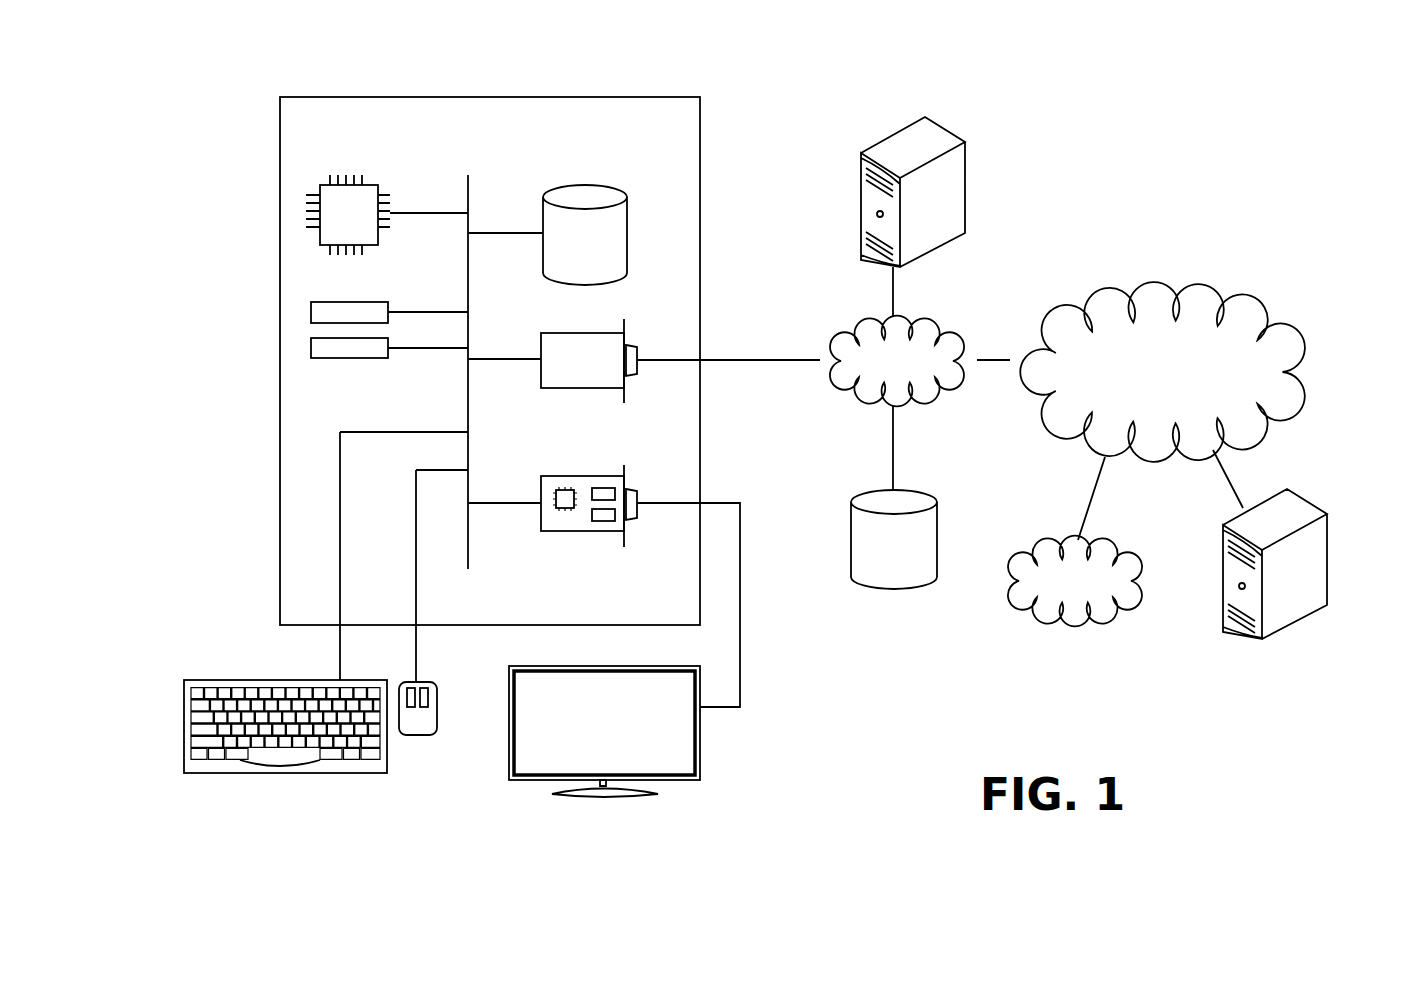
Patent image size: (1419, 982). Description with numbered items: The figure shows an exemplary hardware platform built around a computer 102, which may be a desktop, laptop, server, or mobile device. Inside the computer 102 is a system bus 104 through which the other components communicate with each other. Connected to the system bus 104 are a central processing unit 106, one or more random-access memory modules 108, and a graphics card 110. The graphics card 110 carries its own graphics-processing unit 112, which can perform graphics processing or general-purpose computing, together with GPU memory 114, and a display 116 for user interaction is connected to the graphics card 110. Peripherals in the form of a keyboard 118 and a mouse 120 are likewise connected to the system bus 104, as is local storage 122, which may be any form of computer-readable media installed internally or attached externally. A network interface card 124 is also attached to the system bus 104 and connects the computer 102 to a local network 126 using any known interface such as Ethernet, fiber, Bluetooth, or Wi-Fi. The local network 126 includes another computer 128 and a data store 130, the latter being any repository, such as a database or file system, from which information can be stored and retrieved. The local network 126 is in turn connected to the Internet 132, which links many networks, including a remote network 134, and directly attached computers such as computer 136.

The computer 102 is at (653, 97).
The system bus 104 is at (470, 184).
The central processing unit 106 is at (378, 180).
The random-access memory modules 108 is at (388, 345).
The graphics card 110 is at (540, 487).
The graphics-processing unit 112 is at (564, 512).
The GPU memory 114 is at (600, 522).
The display 116 is at (702, 760).
The keyboard 118 is at (288, 775).
The mouse 120 is at (415, 735).
The local storage 122 is at (628, 218).
The network interface card 124 is at (540, 342).
The local network 126 is at (947, 318).
The computer 128 is at (952, 130).
The data store 130 is at (928, 492).
The Internet 132 is at (1210, 283).
The remote network 134 is at (1133, 537).
The computer 136 is at (1300, 492).